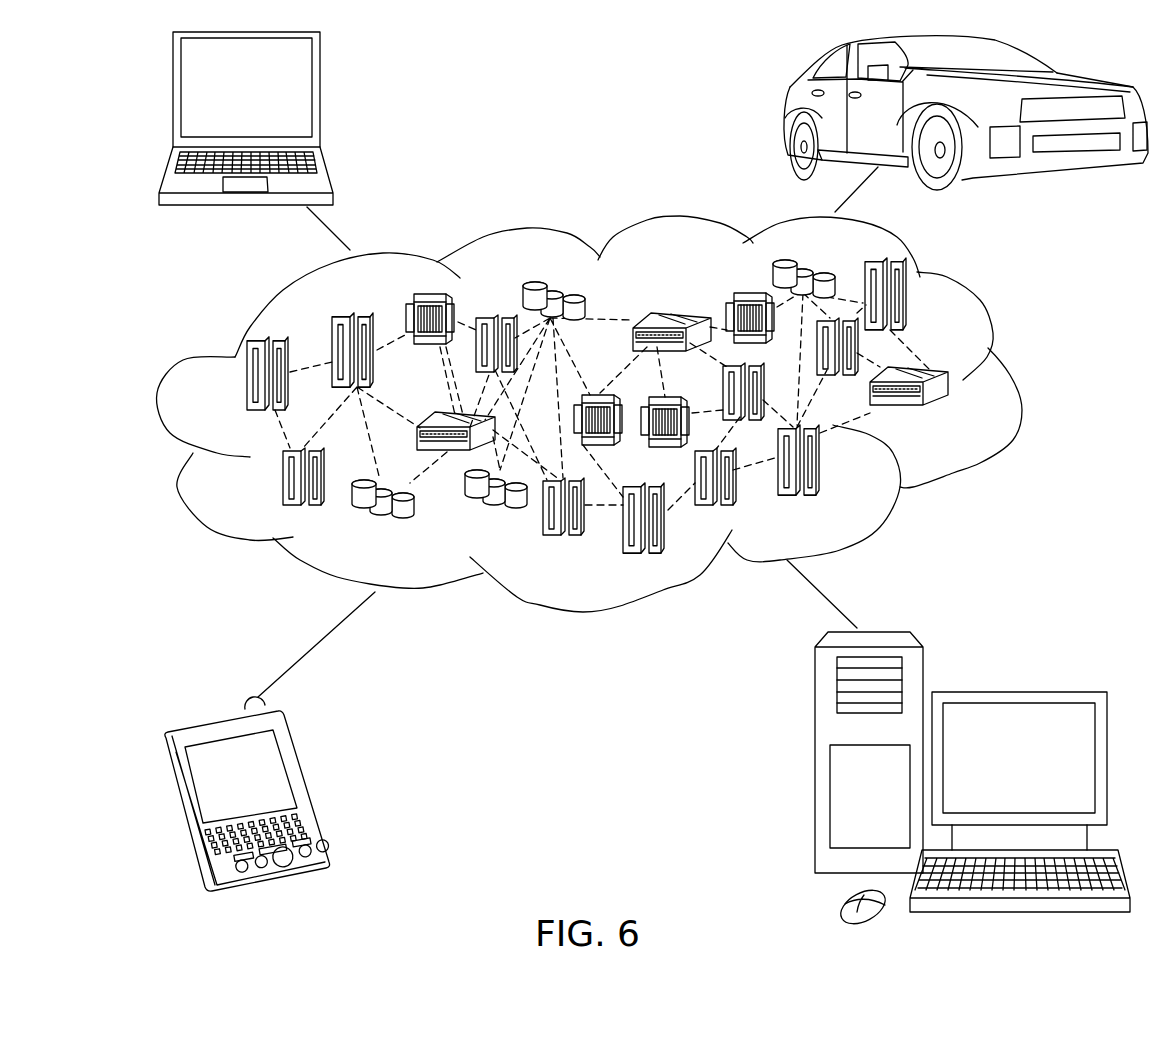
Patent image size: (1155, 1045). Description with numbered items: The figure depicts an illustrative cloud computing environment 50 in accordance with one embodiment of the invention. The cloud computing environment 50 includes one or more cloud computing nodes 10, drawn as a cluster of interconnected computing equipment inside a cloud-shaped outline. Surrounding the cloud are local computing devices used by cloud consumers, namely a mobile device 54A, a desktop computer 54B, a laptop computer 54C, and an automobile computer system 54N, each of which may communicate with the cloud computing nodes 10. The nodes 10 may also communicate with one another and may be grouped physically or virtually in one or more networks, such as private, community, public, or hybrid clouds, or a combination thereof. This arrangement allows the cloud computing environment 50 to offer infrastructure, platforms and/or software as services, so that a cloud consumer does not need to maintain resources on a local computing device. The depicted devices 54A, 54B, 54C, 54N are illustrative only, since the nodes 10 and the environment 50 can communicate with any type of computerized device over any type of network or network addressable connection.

The cloud computing environment 50 is at (1013, 383).
The cloud computing nodes 10 is at (953, 417).
The mobile device 54A is at (310, 788).
The desktop computer 54B is at (1015, 691).
The laptop computer 54C is at (320, 97).
The automobile computer system 54N is at (782, 111).